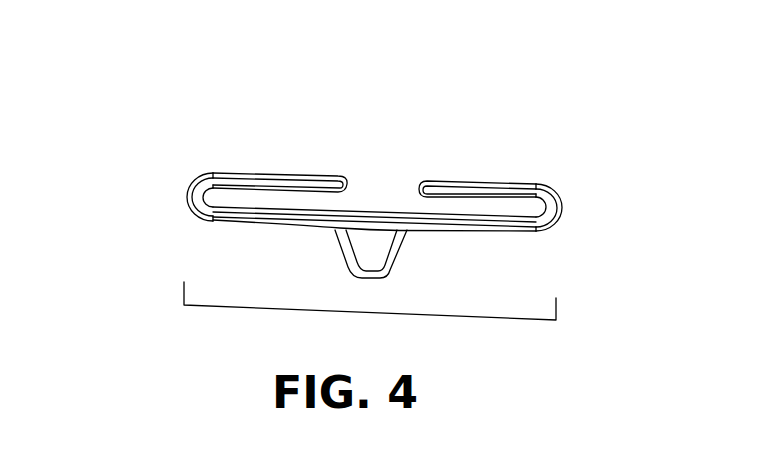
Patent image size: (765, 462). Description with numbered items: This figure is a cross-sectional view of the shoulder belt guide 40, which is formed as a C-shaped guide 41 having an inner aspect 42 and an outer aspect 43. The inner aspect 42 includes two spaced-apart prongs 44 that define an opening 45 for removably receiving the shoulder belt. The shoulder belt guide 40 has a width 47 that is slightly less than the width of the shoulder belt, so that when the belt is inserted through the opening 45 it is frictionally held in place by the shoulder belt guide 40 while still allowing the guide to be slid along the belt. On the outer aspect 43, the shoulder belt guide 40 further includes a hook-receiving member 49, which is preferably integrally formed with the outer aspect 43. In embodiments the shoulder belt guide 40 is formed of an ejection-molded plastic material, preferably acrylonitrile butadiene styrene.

The shoulder belt guide 40 is at (537, 107).
The C-shaped guide 41 is at (185, 197).
The inner aspect 42 is at (378, 207).
The outer aspect 43 is at (292, 217).
The prongs 44 is at (292, 183).
The opening 45 is at (368, 188).
The width 47 is at (490, 320).
The hook-receiving member 49 is at (398, 257).